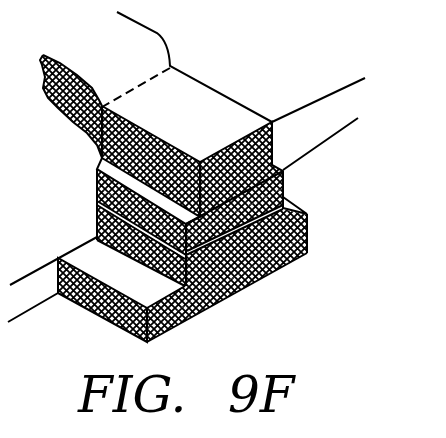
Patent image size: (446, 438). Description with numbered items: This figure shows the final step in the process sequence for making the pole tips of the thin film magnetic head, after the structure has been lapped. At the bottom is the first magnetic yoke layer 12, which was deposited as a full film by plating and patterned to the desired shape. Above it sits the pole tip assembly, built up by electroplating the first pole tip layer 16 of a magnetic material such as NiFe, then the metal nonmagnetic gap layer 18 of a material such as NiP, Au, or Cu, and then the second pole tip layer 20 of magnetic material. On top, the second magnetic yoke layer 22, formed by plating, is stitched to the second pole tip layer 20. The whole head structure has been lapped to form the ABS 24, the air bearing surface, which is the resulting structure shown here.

The first magnetic yoke layer 12 is at (295, 257).
The first pole tip layer 16 is at (310, 230).
The metal nonmagnetic gap layer 18 is at (283, 201).
The second pole tip layer 20 is at (283, 174).
The second magnetic yoke layer 22 is at (229, 108).
The ABS 24 is at (225, 297).